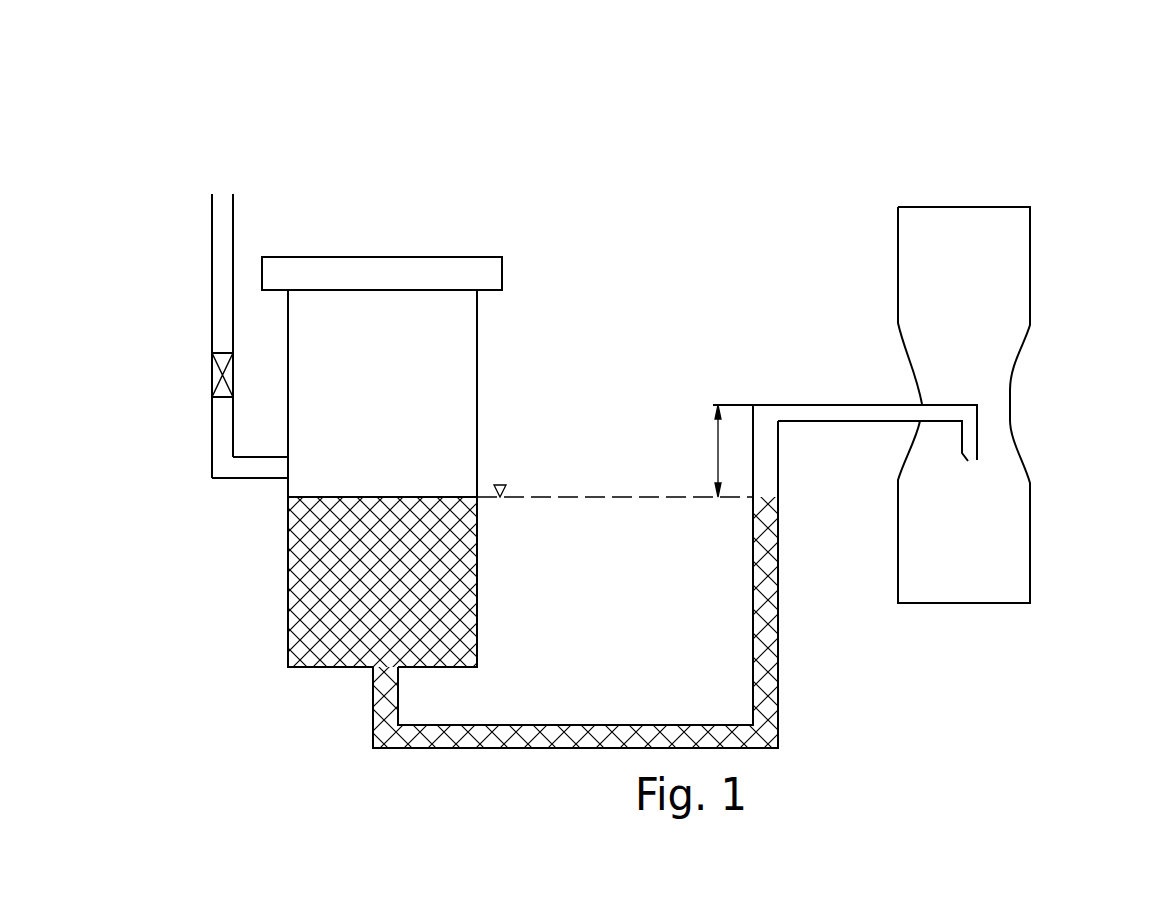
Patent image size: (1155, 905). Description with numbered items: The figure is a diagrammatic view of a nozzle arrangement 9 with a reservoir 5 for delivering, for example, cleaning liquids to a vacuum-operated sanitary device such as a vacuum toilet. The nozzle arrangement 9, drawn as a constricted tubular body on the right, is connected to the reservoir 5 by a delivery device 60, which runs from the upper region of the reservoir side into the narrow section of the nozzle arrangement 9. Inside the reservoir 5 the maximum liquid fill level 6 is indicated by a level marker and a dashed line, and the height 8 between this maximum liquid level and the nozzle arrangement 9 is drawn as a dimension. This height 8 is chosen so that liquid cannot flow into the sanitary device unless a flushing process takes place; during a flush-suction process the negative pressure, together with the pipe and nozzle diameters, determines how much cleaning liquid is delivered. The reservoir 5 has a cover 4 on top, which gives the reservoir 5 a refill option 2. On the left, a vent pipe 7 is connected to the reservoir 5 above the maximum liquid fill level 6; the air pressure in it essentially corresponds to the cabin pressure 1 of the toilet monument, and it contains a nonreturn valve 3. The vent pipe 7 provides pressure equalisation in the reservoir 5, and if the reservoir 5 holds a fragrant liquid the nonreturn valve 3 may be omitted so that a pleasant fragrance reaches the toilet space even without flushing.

The cabin pressure 1 is at (222, 203).
The refill option 2 is at (449, 375).
The nonreturn valve 3 is at (208, 373).
The cover 4 is at (502, 270).
The reservoir 5 is at (435, 387).
The maximum liquid fill level 6 is at (615, 479).
The vent pipe 7 is at (243, 482).
The height 8 is at (707, 451).
The nozzle arrangement 9 is at (1032, 250).
The delivery device 60 is at (783, 402).